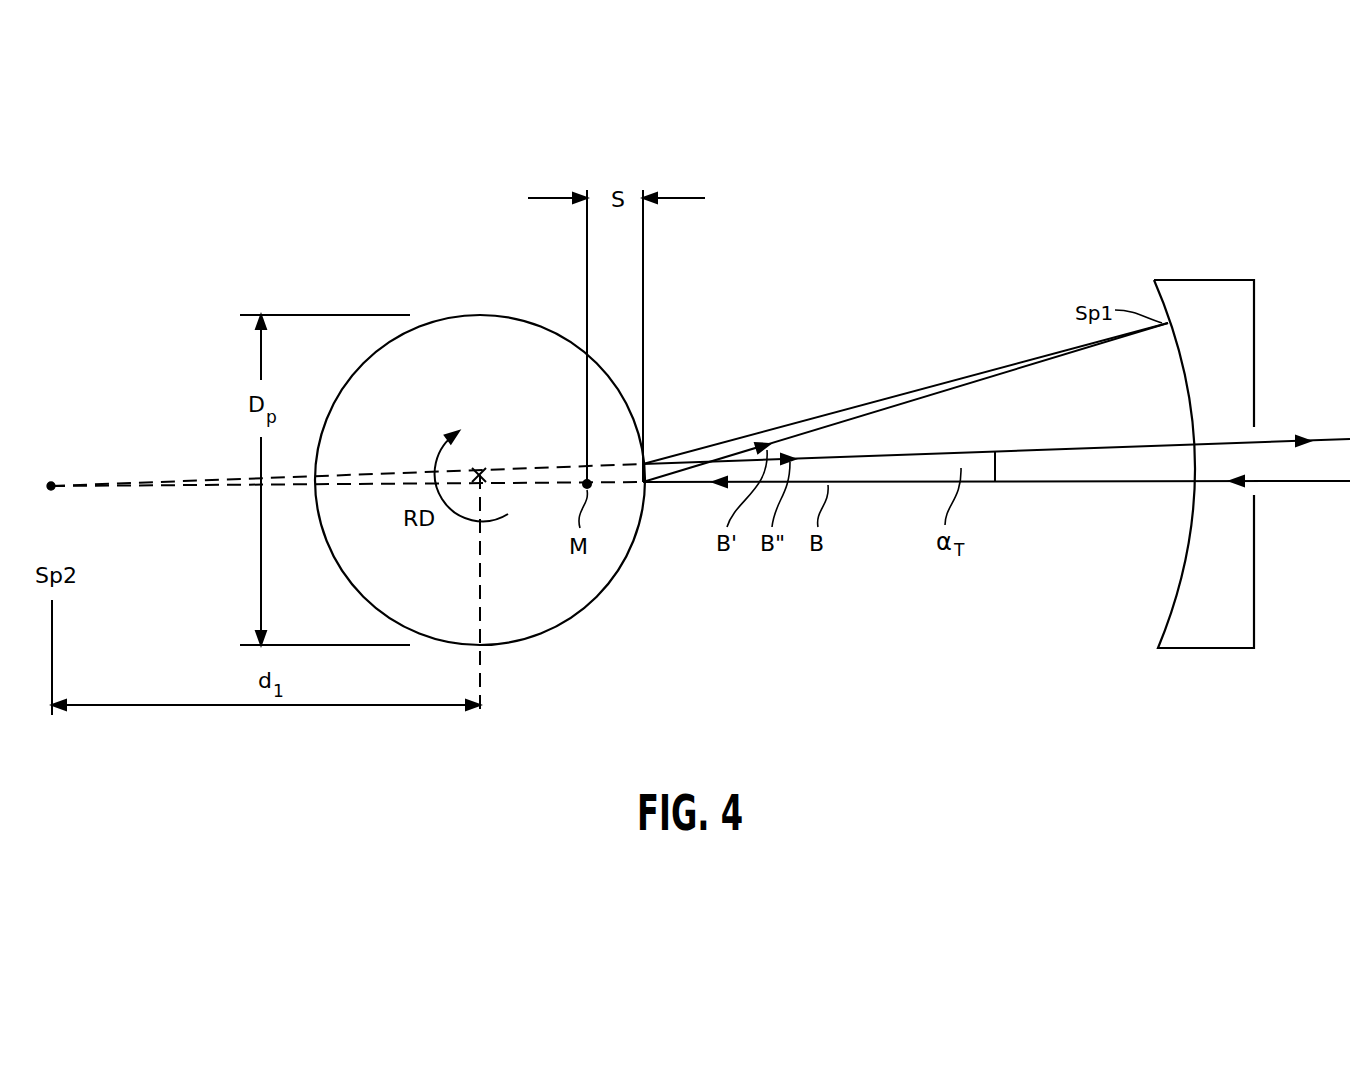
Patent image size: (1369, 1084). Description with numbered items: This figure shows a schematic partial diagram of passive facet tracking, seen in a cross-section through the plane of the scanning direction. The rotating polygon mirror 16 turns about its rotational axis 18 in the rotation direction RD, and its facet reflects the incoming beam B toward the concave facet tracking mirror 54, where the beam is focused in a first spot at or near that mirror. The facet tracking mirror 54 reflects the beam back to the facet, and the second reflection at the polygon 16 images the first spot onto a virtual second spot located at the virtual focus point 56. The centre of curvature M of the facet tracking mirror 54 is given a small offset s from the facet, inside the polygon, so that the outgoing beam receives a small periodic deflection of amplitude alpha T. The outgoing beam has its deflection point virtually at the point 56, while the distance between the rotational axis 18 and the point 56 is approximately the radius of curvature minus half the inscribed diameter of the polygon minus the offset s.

The polygon mirror 16 is at (562, 598).
The rotational axis 18 is at (479, 468).
The facet tracking mirror 54 is at (1242, 342).
The virtual focus point 56 is at (51, 492).